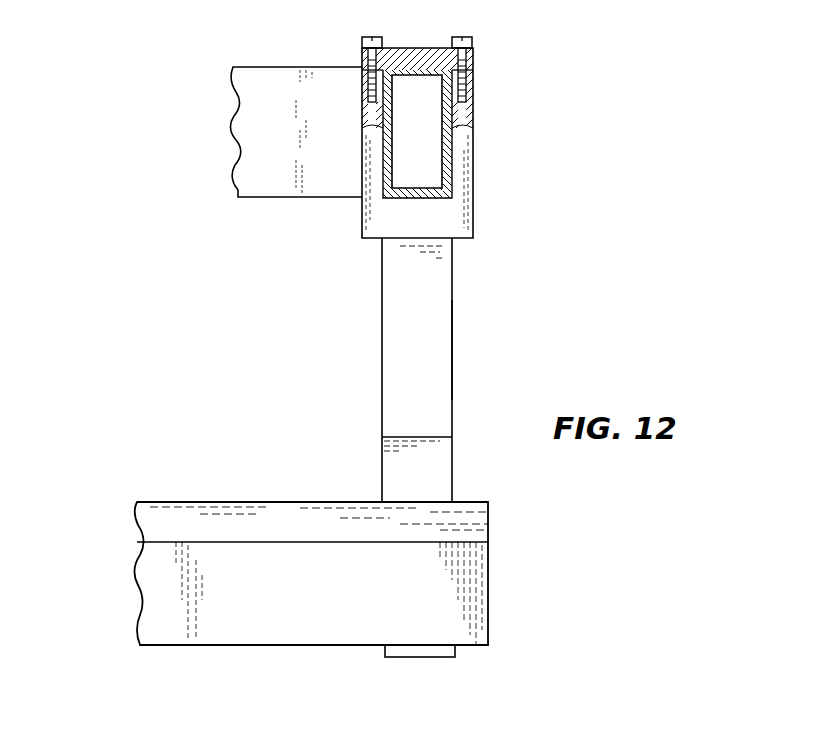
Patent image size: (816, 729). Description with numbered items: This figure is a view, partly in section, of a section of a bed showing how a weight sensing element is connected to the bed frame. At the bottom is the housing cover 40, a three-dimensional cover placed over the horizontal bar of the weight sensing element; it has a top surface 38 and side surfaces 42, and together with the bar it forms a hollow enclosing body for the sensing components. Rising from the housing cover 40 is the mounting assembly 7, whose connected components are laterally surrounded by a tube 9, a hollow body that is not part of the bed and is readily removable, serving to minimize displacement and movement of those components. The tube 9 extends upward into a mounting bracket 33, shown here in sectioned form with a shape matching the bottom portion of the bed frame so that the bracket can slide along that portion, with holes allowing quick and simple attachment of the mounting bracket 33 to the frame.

The mounting assembly 7 is at (382, 359).
The tube 9 is at (452, 346).
The mounting bracket 33 is at (460, 206).
The top surface 38 is at (188, 502).
The housing cover 40 is at (152, 612).
The side surfaces 42 is at (152, 565).